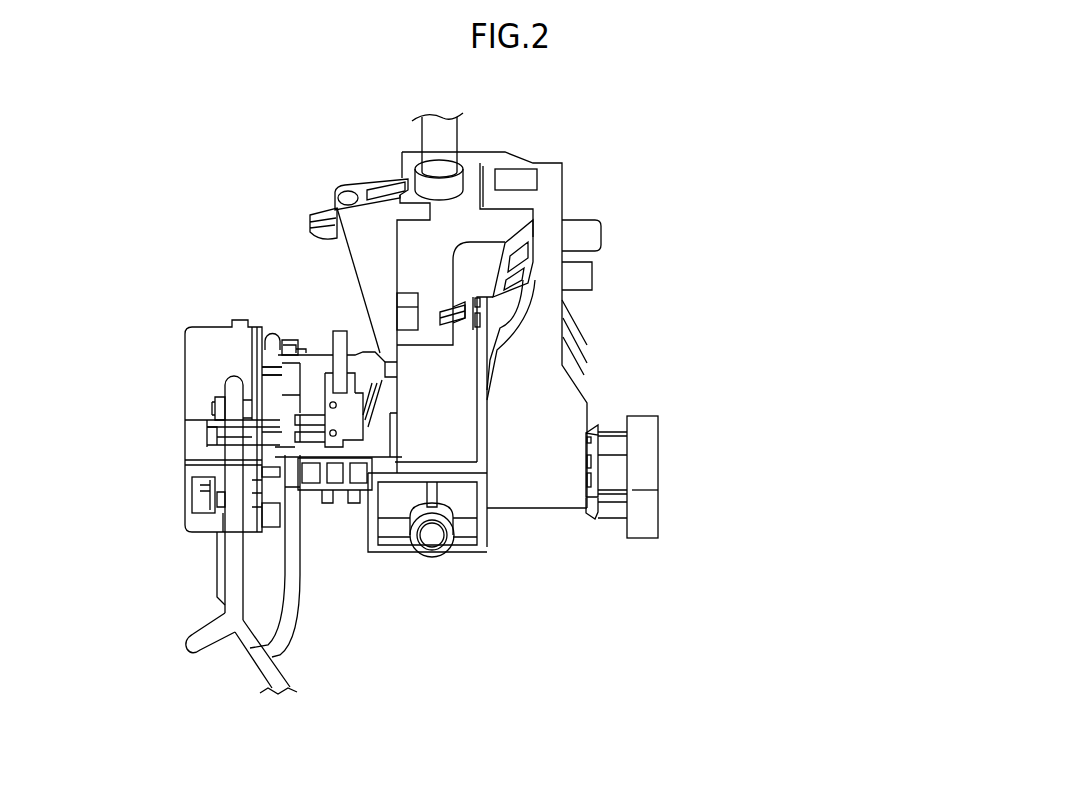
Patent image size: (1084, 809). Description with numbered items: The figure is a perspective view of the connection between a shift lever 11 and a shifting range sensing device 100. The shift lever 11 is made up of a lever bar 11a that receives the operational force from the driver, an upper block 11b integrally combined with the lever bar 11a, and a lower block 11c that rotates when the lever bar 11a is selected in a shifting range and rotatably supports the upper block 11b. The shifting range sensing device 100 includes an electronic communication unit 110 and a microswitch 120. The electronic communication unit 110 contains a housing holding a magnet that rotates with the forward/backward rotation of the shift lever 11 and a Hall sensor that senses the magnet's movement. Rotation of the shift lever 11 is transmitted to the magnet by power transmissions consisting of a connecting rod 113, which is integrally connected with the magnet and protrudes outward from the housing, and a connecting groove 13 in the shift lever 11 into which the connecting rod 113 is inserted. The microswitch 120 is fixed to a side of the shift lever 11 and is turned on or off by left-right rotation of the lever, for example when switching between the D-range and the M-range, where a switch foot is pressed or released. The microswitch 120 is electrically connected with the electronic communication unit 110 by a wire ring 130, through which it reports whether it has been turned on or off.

The shift lever 11 is at (832, 143).
The lever bar 11a is at (443, 137).
The upper block 11b is at (436, 295).
The lower block 11c is at (447, 515).
The connecting groove 13 is at (288, 350).
The connecting rod 113 is at (287, 352).
The shifting range sensing device 100 is at (329, 540).
The electronic communication unit 110 is at (210, 453).
The microswitch 120 is at (343, 425).
The wire ring 130 is at (170, 643).